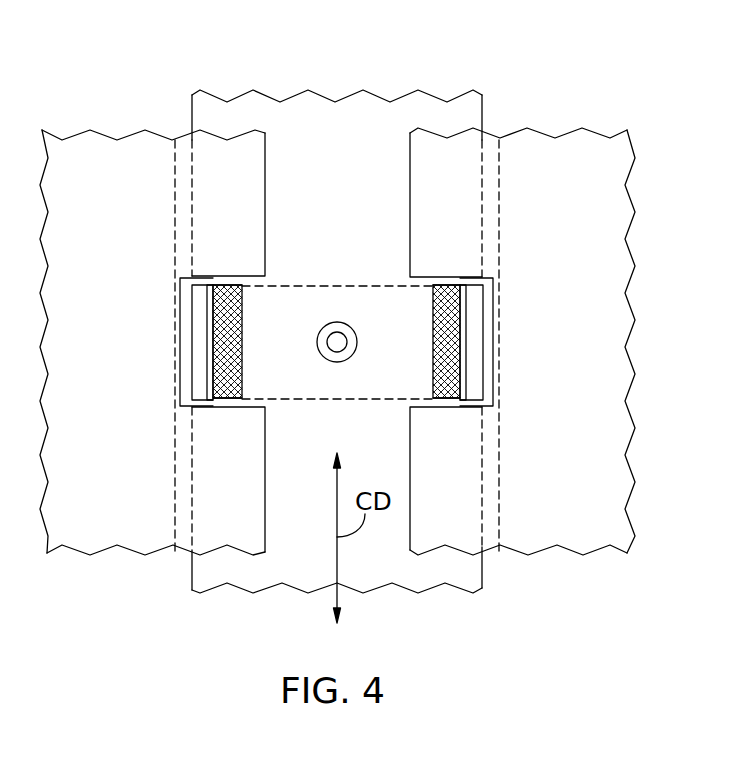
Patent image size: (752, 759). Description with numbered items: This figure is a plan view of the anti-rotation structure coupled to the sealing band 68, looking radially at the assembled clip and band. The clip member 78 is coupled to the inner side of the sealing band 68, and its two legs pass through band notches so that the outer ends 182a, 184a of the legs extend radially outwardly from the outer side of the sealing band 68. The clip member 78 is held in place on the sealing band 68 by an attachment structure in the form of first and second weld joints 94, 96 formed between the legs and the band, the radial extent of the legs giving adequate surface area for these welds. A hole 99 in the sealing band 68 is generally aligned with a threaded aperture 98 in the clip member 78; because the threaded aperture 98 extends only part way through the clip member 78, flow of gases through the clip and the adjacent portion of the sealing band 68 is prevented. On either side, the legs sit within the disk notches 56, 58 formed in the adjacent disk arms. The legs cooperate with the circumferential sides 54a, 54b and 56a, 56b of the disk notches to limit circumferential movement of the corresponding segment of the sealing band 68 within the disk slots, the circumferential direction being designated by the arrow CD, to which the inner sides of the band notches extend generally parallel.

The sealing band 68 is at (337, 316).
The clip member 78 is at (337, 291).
The disk notch 56 is at (181, 382).
The disk notch 58 is at (494, 382).
The outer end of first leg 182a is at (204, 337).
The outer end of second leg 184a is at (472, 337).
The first weld joint 94 is at (243, 340).
The second weld joint 96 is at (432, 340).
The circumferential side of disk notch 54a is at (243, 402).
The circumferential side of disk notch 54b is at (243, 284).
The circumferential side of disk notch 56a is at (432, 402).
The circumferential side of disk notch 56b is at (432, 284).
The threaded aperture 98 is at (338, 333).
The hole 99 is at (345, 352).